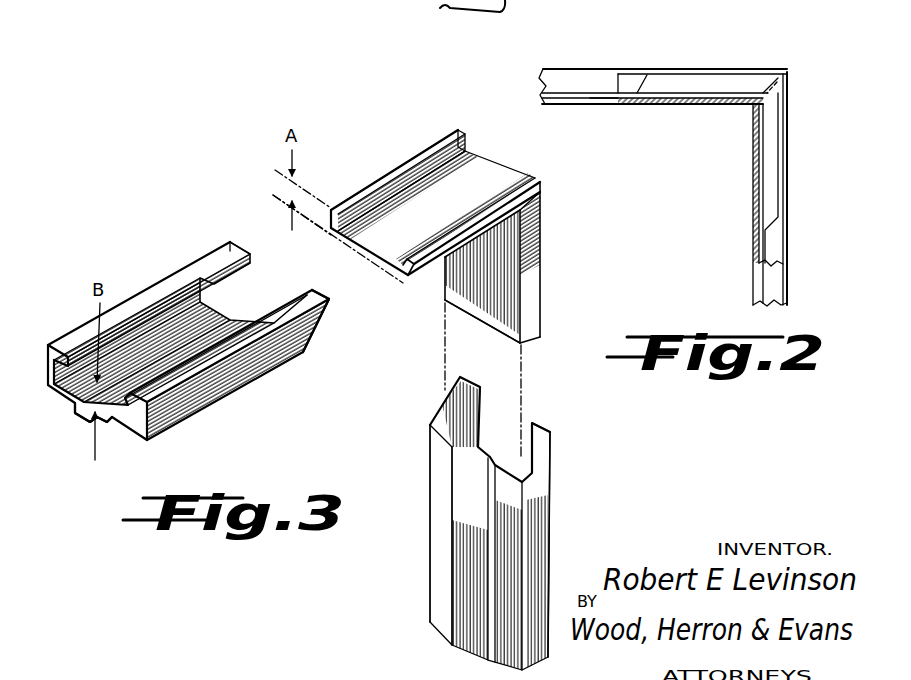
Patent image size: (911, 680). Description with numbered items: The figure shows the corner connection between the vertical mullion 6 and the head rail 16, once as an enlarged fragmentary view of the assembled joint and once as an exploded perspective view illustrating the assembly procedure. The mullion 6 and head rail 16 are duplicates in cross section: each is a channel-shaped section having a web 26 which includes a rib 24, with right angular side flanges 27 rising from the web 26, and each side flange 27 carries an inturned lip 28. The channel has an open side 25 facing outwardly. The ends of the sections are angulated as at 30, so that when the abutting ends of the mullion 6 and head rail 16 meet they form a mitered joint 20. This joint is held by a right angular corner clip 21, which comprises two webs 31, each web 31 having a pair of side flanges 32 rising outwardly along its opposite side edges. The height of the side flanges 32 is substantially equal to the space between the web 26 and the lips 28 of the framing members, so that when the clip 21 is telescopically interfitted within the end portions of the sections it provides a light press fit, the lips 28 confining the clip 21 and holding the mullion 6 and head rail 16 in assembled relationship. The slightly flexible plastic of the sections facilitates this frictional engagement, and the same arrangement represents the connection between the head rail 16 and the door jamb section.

In FIG. 3, the vertical mullion section 6 is at (541, 505).
In FIG. 2, the vertical mullion section 6 is at (783, 279).
In FIG. 3, the head rail 16 is at (183, 274).
In FIG. 2, the head rail 16 is at (583, 70).
In FIG. 2, the mitered joint 20 is at (793, 88).
In FIG. 3, the corner clip 21 is at (536, 236).
In FIG. 2, the corner clip 21 is at (719, 88).
In FIG. 3, the rib 24 is at (87, 425).
In FIG. 2, the rib 24 is at (750, 282).
In FIG. 3, the open side 25 is at (273, 283).
In FIG. 3, the web 26 is at (123, 437).
In FIG. 2, the web 26 is at (568, 108).
In FIG. 3, the side flange 27 is at (42, 360).
In FIG. 3, the inturned lip 28 is at (217, 258).
In FIG. 3, the angulated end 30 is at (307, 340).
In FIG. 2, the angulated end 30 is at (793, 108).
In FIG. 3, the web 31 is at (478, 182).
In FIG. 3, the side flange 32 is at (372, 178).
In FIG. 2, the side flange 32 is at (773, 167).